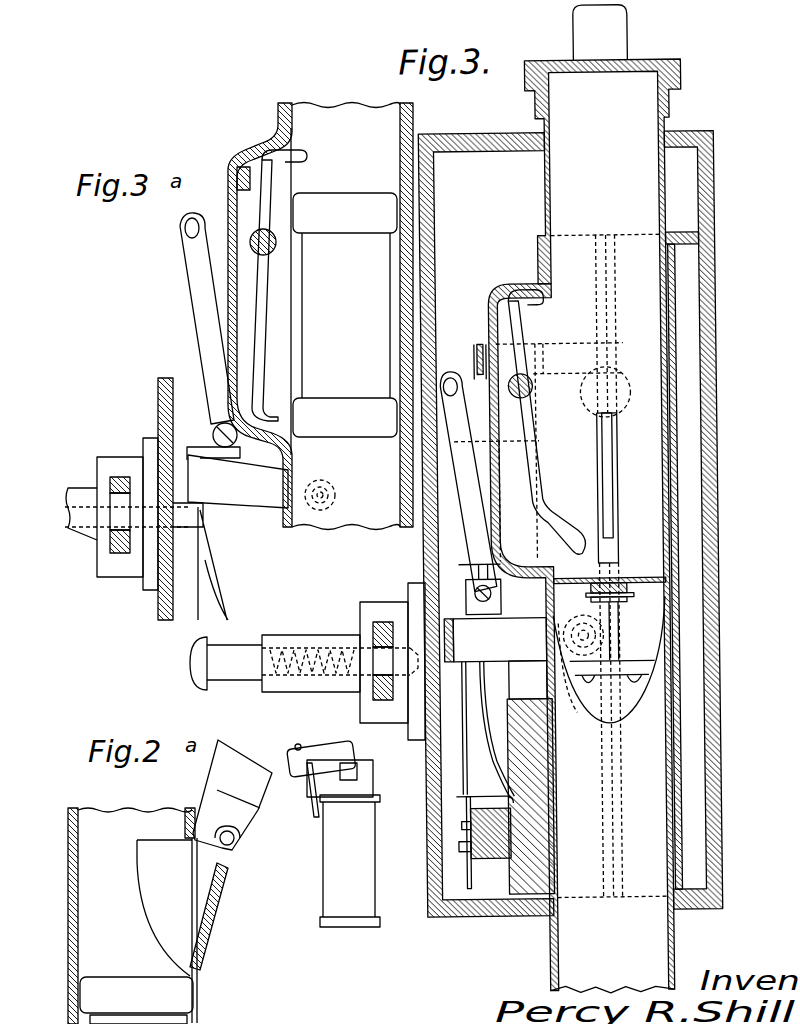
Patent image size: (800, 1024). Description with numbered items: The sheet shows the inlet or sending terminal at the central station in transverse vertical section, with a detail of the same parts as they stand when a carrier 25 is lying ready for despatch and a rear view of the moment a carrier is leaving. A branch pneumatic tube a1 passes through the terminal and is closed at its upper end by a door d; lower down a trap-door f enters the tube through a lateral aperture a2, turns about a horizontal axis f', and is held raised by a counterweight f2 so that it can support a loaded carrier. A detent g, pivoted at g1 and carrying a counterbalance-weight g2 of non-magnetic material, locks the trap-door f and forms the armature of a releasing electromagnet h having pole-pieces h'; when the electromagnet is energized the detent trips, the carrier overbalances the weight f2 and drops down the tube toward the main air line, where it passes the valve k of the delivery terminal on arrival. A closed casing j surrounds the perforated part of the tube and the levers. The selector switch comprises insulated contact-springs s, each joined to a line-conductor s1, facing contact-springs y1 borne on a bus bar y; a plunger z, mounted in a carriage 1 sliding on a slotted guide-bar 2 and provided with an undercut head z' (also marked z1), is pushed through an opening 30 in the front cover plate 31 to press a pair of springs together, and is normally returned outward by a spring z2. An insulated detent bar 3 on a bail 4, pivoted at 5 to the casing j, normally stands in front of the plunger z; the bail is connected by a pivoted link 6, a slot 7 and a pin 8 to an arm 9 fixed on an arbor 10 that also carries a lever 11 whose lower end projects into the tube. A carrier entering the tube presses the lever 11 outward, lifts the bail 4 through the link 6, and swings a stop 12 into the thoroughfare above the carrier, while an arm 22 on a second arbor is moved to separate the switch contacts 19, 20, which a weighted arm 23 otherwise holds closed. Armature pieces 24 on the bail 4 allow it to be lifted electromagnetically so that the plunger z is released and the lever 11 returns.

In FIG. 3, the door d is at (553, 54).
In FIG. 3, the switch contact 19 is at (462, 346).
In FIG. 3, the closed casing j is at (495, 303).
In FIG. 3, the movable switch arm 20 is at (481, 348).
In FIG. 3, the arm 9 is at (478, 368).
In FIG. 3A, the arm 9 is at (253, 228).
In FIG. 3, the pin 8 is at (450, 376).
In FIG. 3A, the pin 8 is at (185, 236).
In FIG. 3, the slot 7 is at (466, 396).
In FIG. 3A, the slot 7 is at (190, 238).
In FIG. 3, the pivoted link 6 is at (459, 440).
In FIG. 3A, the pivoted link 6 is at (197, 290).
In FIG. 3, the stop 12 is at (545, 298).
In FIG. 3A, the stop 12 is at (298, 155).
In FIG. 3, the arbor 10 is at (534, 392).
In FIG. 3A, the arbor 10 is at (276, 250).
In FIG. 3, the lever 11 is at (540, 500).
In FIG. 3A, the lever 11 is at (262, 333).
In FIG. 3, the weighted arm 23 is at (624, 400).
In FIG. 3, the second arm 22 is at (619, 454).
In FIG. 3, the trap-door f is at (609, 564).
In FIG. 2A, the trap-door f is at (213, 916).
In FIG. 3, the counterweight f2 is at (637, 598).
In FIG. 2A, the counterweight f2 is at (243, 775).
In FIG. 3, the valve k is at (599, 596).
In FIG. 3, the electromagnet h is at (626, 630).
In FIG. 2A, the electromagnet h is at (335, 861).
In FIG. 3, the armature pieces 24 is at (500, 608).
In FIG. 3, the insulated detent bar 3 is at (445, 617).
In FIG. 3A, the insulated detent bar 3 is at (185, 462).
In FIG. 3, the bail 4 is at (456, 636).
In FIG. 3A, the bail 4 is at (195, 481).
In FIG. 3, the pivot 5 is at (581, 671).
In FIG. 3A, the pivot 5 is at (337, 490).
In FIG. 3, the lateral aperture a2 is at (625, 712).
In FIG. 2A, the lateral aperture a2 is at (140, 890).
In FIG. 3, the branch pneumatic tube a1 is at (611, 934).
In FIG. 3, the contact-springs y1 is at (488, 730).
In FIG. 3, the bus bar y is at (508, 806).
In FIG. 3, the contact-springs s is at (462, 790).
In FIG. 3, the line-conductor s1 is at (468, 866).
In FIG. 3, the front cover plate 31 is at (431, 585).
In FIG. 3, the opening 30 is at (428, 648).
In FIG. 3, the guide-bar 2 is at (373, 630).
In FIG. 3, the carriage 1 is at (306, 641).
In FIG. 2A, the carriage 1 is at (335, 743).
In FIG. 3, the plunger z is at (217, 672).
In FIG. 3, the undercut head z1 is at (401, 748).
In FIG. 3, the spring z2 is at (261, 679).
In FIG. 3A, the undercut head z' is at (150, 499).
In FIG. 3A, the carrier 25 is at (345, 315).
In FIG. 2A, the carrier 25 is at (136, 1000).
In FIG. 2A, the horizontal axis f' is at (238, 850).
In FIG. 2A, the detent g is at (310, 804).
In FIG. 2A, the pivot g1 is at (298, 755).
In FIG. 2A, the counterbalance-weight g2 is at (348, 770).
In FIG. 2A, the pole-pieces h' is at (307, 842).